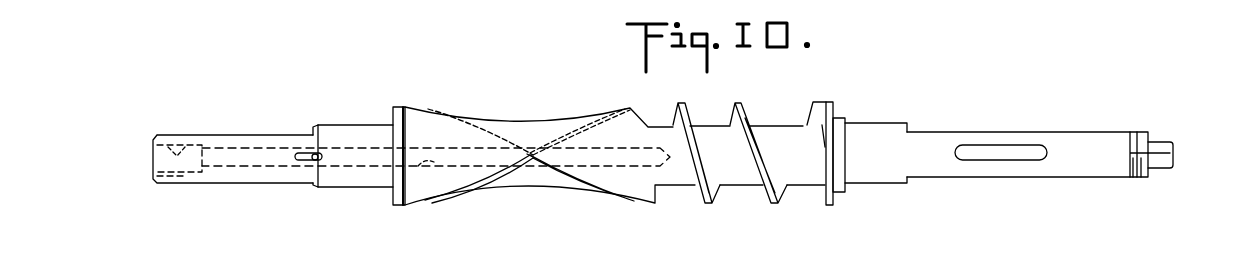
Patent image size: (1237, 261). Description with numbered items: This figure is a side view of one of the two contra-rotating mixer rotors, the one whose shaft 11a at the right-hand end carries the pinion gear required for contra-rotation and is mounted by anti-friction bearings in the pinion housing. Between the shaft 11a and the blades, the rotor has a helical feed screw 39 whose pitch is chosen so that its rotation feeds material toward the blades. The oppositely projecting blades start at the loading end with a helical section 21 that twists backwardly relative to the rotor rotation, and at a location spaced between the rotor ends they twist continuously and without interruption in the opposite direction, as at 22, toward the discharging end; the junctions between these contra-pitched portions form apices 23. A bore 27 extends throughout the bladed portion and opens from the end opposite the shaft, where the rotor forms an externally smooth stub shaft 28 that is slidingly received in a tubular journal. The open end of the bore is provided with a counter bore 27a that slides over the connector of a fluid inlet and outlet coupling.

The shaft 11a is at (1072, 128).
The helical section 21 is at (567, 122).
The oppositely twisting blade portion 22 is at (473, 120).
The apices 23 is at (530, 155).
The bore 27 is at (433, 164).
The counter bore 27a is at (187, 150).
The stub shaft 28 is at (231, 182).
The helical feed screw 39 is at (773, 203).